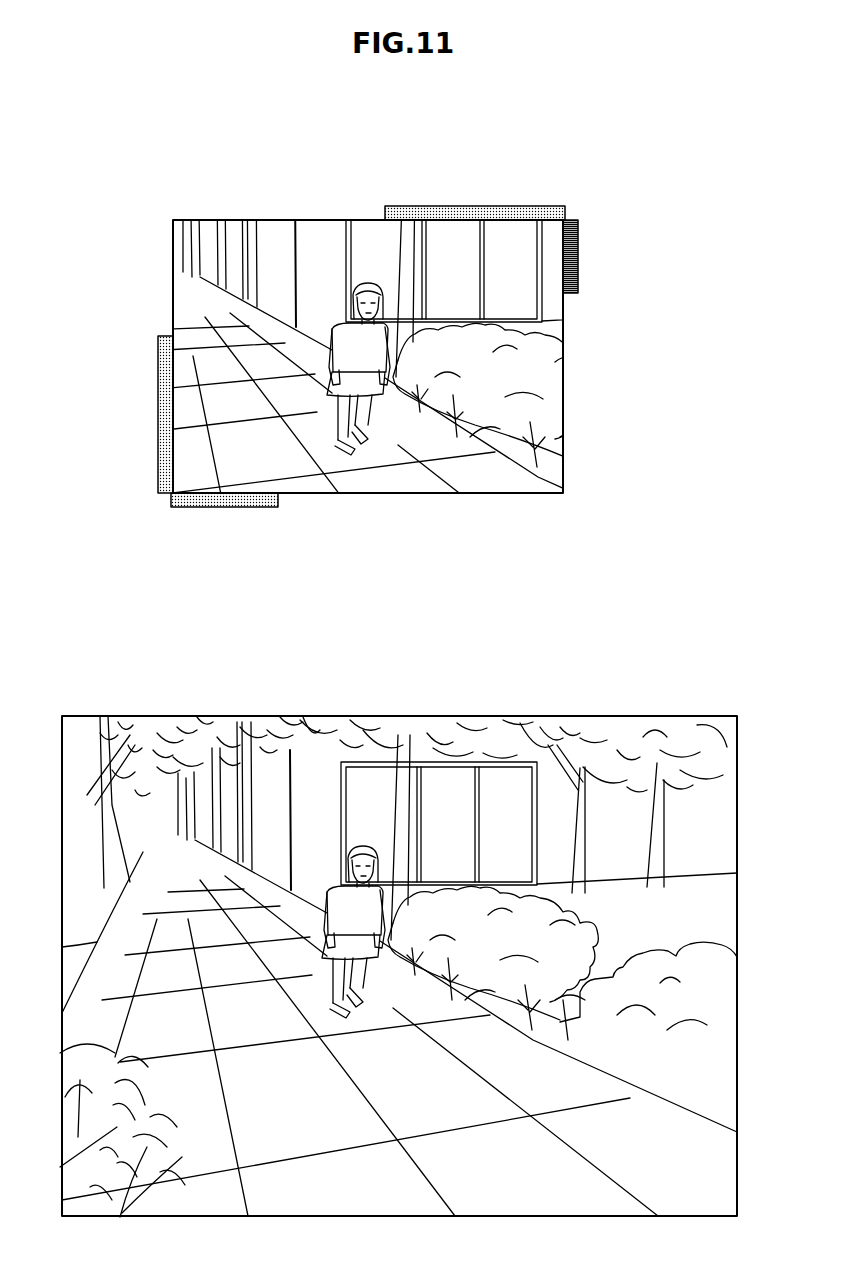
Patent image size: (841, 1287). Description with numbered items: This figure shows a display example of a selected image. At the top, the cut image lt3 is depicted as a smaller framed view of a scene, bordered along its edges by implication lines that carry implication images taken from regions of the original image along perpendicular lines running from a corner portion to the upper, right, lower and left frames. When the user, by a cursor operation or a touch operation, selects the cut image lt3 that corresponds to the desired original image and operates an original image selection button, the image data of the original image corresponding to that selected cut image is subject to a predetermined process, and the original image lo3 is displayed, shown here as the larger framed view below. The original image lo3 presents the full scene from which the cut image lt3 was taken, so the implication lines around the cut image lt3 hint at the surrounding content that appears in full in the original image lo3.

The cut image lt3 is at (403, 403).
The original image lo3 is at (398, 934).